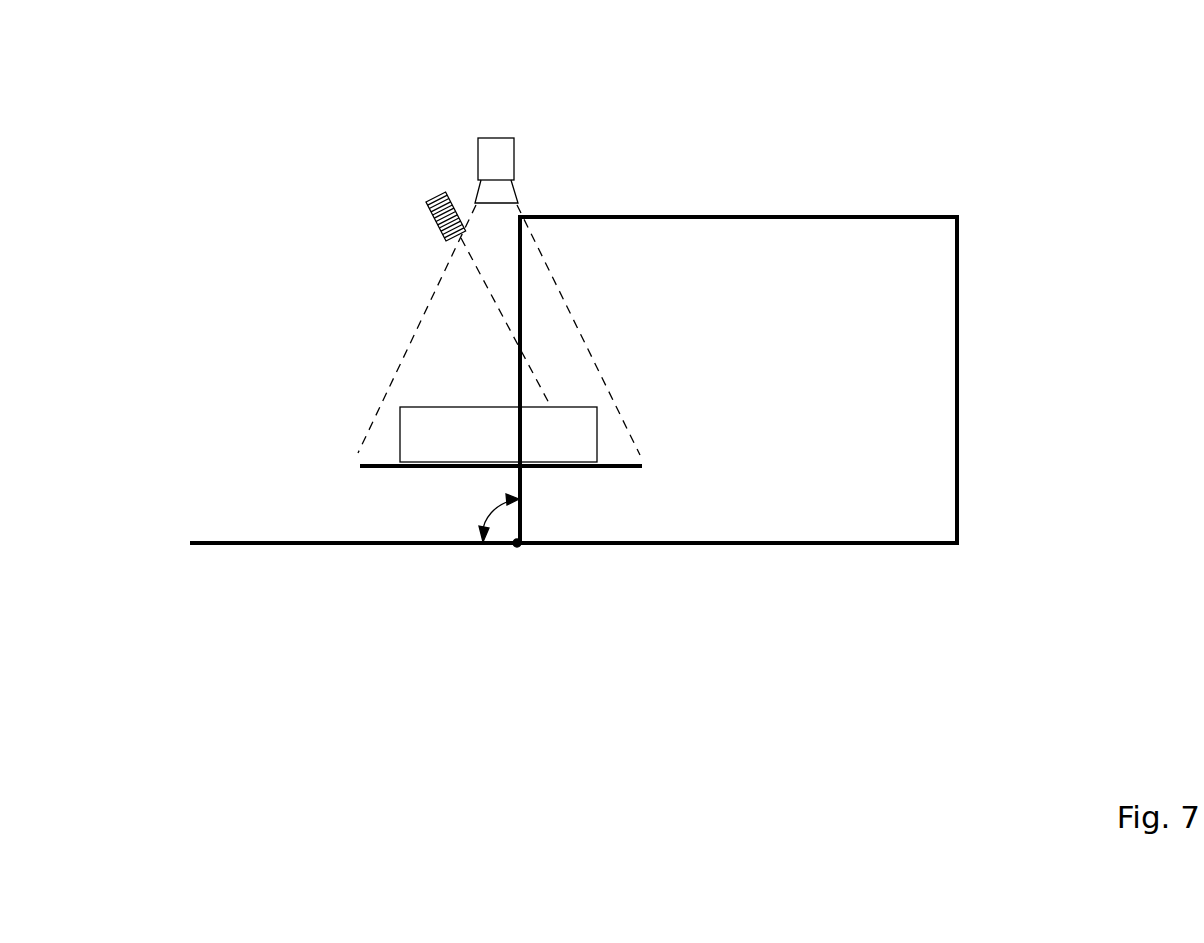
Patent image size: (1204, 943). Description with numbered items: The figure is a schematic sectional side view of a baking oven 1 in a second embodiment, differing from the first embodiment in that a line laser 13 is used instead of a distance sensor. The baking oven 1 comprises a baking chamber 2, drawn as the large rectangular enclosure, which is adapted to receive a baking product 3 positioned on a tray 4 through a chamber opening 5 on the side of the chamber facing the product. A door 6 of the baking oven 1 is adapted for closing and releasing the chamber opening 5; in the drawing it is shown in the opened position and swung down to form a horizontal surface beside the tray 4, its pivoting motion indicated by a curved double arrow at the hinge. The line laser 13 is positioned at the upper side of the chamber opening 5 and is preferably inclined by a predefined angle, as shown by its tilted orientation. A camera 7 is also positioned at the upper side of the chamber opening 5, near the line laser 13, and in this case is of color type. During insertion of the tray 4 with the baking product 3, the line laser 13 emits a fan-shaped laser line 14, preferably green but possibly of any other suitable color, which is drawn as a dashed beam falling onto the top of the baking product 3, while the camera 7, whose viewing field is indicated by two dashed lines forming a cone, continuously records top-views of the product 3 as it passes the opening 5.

The baking oven 1 is at (947, 123).
The baking chamber 2 is at (935, 317).
The baking product 3 is at (585, 407).
The tray 4 is at (360, 466).
The chamber opening 5 is at (530, 233).
The door 6 is at (200, 542).
The camera 7 is at (514, 151).
The line laser 13 is at (427, 207).
The laser line 14 is at (510, 332).